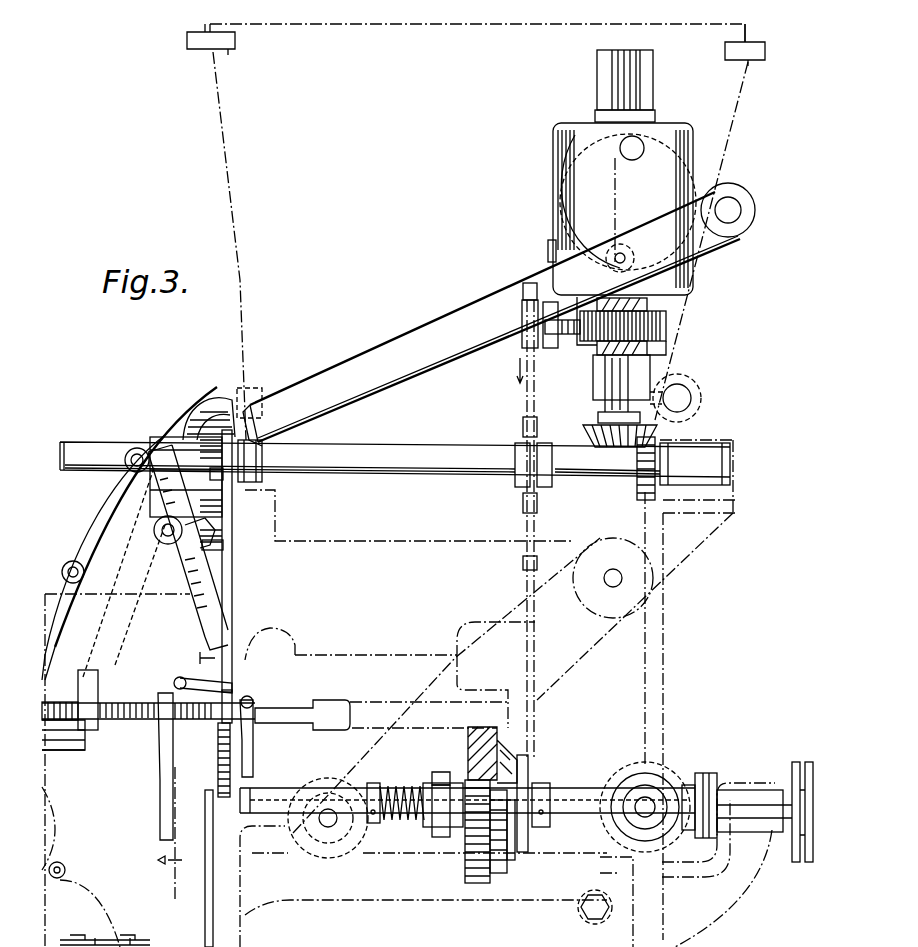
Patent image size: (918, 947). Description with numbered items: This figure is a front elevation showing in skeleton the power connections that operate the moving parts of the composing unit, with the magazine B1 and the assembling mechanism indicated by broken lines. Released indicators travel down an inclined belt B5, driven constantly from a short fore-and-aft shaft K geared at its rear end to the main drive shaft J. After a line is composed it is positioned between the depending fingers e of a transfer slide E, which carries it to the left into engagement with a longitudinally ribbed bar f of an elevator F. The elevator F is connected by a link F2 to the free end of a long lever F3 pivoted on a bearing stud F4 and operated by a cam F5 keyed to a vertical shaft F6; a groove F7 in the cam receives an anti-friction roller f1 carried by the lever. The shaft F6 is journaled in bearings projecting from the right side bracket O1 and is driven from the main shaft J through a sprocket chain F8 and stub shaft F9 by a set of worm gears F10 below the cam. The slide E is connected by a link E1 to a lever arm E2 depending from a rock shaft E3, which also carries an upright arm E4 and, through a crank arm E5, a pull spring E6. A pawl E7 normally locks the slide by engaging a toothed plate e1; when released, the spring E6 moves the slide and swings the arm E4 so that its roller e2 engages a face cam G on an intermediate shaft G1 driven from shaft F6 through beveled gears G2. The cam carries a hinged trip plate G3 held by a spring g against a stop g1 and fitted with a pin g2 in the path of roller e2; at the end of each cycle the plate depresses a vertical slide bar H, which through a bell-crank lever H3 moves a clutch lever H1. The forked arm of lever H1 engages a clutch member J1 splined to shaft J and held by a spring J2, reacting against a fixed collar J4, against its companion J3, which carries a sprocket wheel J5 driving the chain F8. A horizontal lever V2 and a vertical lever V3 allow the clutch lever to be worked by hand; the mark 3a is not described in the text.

The right side bracket O1 is at (476, 50).
The magazine B1 is at (232, 228).
The inclined belt B5 is at (566, 673).
The elevator F is at (95, 695).
The link F2 is at (56, 660).
The long lever F3 is at (408, 325).
The bearing stud F4 is at (735, 208).
The cam F5 is at (624, 209).
The vertical shaft F6 is at (640, 92).
The groove F7 is at (556, 250).
The sprocket chain F8 is at (527, 395).
The stub shaft F9 is at (560, 340).
The worm gears F10 is at (675, 322).
The longitudinally ribbed bar f is at (66, 750).
The anti-friction roller f1 is at (606, 266).
The face cam G is at (213, 400).
The intermediate shaft G1 is at (338, 452).
The beveled gears G2 is at (628, 450).
The hinged trip plate G3 is at (258, 428).
The spring g is at (290, 453).
The stop g1 is at (225, 480).
The pin or stud g2 is at (195, 425).
The transfer slide E is at (292, 710).
The link E1 is at (152, 692).
The lever arm E2 is at (222, 622).
The rock shaft E3 is at (158, 540).
The upright arm E4 is at (143, 508).
The crank arm E5 is at (195, 542).
The pull spring E6 is at (224, 546).
The pawl or trigger E7 is at (185, 678).
The depending fingers e is at (158, 768).
The toothed plate e1 is at (253, 698).
The roller e2 is at (139, 449).
The vertical slide bar H is at (232, 578).
The clutch lever H1 is at (250, 795).
The bell-crank lever H3 is at (232, 660).
The main drive shaft J is at (300, 825).
The clutch member J1 is at (468, 830).
The spring J2 is at (404, 815).
The companion clutch member J3 is at (522, 752).
The fixed collar J4 is at (375, 785).
The sprocket wheel J5 is at (548, 800).
The short fore-and-aft shaft K is at (652, 800).
The horizontal lever V2 is at (175, 940).
The vertical lever V3 is at (216, 915).
The mark 3a is at (186, 766).